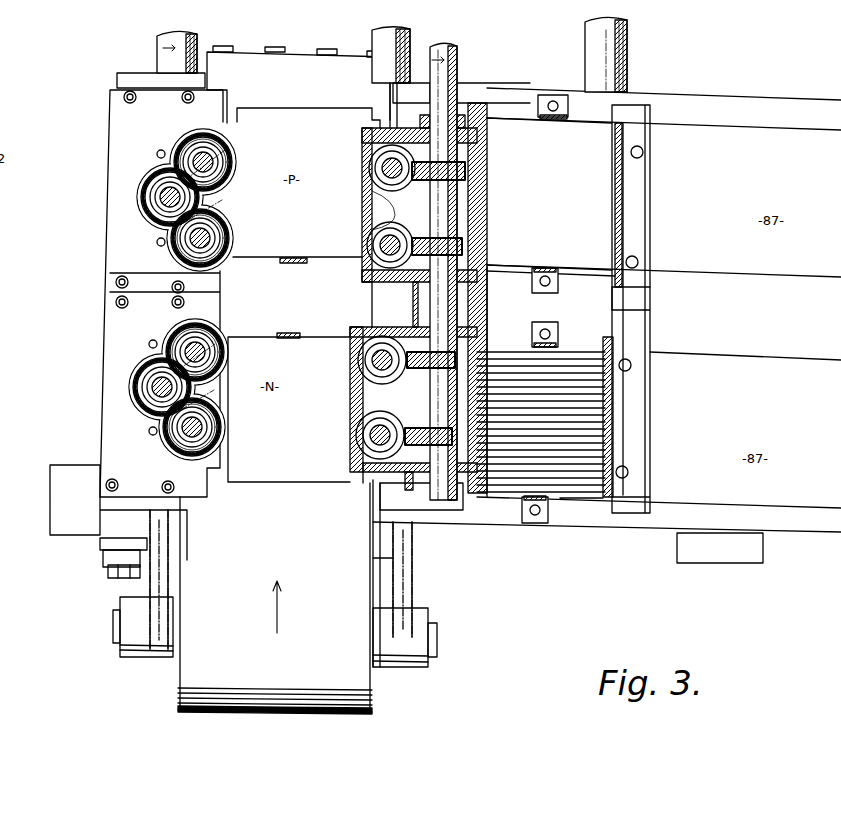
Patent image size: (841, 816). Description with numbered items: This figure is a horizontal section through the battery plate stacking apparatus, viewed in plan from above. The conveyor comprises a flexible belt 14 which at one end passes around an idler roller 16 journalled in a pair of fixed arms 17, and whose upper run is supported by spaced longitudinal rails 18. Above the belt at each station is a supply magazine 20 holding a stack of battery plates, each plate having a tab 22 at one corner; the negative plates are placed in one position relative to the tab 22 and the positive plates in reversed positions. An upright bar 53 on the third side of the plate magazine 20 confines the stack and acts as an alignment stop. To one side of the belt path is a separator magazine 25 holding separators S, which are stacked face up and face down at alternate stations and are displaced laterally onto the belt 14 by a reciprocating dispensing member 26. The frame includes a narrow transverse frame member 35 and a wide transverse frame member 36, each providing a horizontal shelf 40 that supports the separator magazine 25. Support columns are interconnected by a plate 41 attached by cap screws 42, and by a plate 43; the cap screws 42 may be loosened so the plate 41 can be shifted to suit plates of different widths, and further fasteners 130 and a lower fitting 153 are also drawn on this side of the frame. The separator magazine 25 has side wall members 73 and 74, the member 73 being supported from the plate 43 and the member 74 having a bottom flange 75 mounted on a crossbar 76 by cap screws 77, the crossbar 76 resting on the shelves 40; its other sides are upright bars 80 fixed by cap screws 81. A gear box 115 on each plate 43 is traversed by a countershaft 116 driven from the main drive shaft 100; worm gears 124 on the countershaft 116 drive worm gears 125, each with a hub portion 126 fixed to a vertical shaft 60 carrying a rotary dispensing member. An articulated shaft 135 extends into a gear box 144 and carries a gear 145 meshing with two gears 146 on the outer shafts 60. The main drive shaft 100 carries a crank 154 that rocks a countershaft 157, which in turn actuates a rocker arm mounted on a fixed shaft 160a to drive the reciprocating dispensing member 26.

The flexible belt 14 is at (275, 596).
The idler roller 16 is at (372, 689).
The fixed arms 17 is at (150, 600).
The longitudinal rails 18 is at (326, 49).
The supply magazine 20 is at (150, 231).
The tab 22 is at (376, 118).
The separator magazine 25 is at (632, 178).
The reciprocating dispensing member 26 is at (828, 270).
The narrow transverse frame member 35 is at (712, 98).
The wide transverse frame member 36 is at (780, 351).
The horizontal shelf 40 is at (664, 315).
The plate 41 is at (117, 259).
The cap screw 42 is at (124, 100).
The plate 43 is at (465, 103).
The upright bar 53 is at (300, 262).
The vertical shaft 60 is at (200, 350).
The side wall member 73 is at (487, 225).
The side wall member 74 is at (613, 236).
The bottom flange 75 is at (640, 204).
The crossbar 76 is at (652, 262).
The cap screw 77 is at (638, 260).
The upright bar 80 is at (560, 119).
The cap screw 81 is at (553, 101).
The main drive shaft 100 is at (157, 42).
The gear box 115 is at (362, 210).
The countershaft 116 is at (457, 52).
The worm gear 124 is at (466, 171).
The worm gear 125 is at (400, 184).
The hub portion 126 is at (372, 166).
The nut 130 is at (124, 97).
The articulated shaft 135 is at (162, 199).
The gear box 144 is at (140, 180).
The gear 145 is at (152, 195).
The gear 146 is at (226, 162).
The bracket 153 is at (100, 545).
The crank 154 is at (108, 572).
The countershaft 157 is at (410, 33).
The fixed shaft 160a is at (627, 45).
The separator S is at (595, 263).